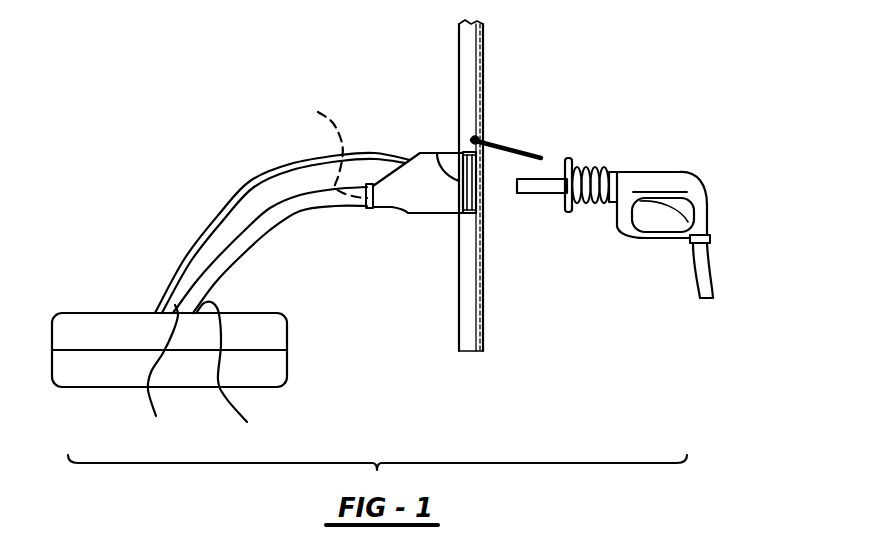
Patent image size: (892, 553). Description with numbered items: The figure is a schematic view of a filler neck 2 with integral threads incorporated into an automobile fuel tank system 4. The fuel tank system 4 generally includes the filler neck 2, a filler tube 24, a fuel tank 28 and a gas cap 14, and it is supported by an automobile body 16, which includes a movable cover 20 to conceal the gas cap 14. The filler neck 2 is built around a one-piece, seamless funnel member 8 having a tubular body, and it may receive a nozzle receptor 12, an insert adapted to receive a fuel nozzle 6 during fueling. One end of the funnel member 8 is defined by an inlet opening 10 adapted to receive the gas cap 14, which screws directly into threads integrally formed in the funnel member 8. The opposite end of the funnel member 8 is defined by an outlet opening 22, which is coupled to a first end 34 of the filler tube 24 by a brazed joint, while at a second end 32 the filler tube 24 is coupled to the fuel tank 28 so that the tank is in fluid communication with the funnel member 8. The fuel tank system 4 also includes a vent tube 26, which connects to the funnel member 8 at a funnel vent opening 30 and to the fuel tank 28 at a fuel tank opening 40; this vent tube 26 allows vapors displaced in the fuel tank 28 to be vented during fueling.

The filler neck 2 is at (393, 191).
The fuel tank system 4 is at (341, 343).
The fuel nozzle 6 is at (618, 217).
The funnel member 8 is at (414, 178).
The inlet opening 10 is at (447, 152).
The nozzle receptor 12 is at (443, 208).
The gas cap 14 is at (483, 192).
The automobile body 16 is at (483, 68).
The movable cover 20 is at (509, 145).
The outlet opening 22 is at (332, 143).
The filler tube 24 is at (243, 248).
The vent tube 26 is at (248, 192).
The fuel tank 28 is at (90, 313).
The funnel vent opening 30 is at (412, 152).
The second end 32 is at (235, 374).
The first end 34 is at (370, 208).
The fuel tank opening 40 is at (163, 374).